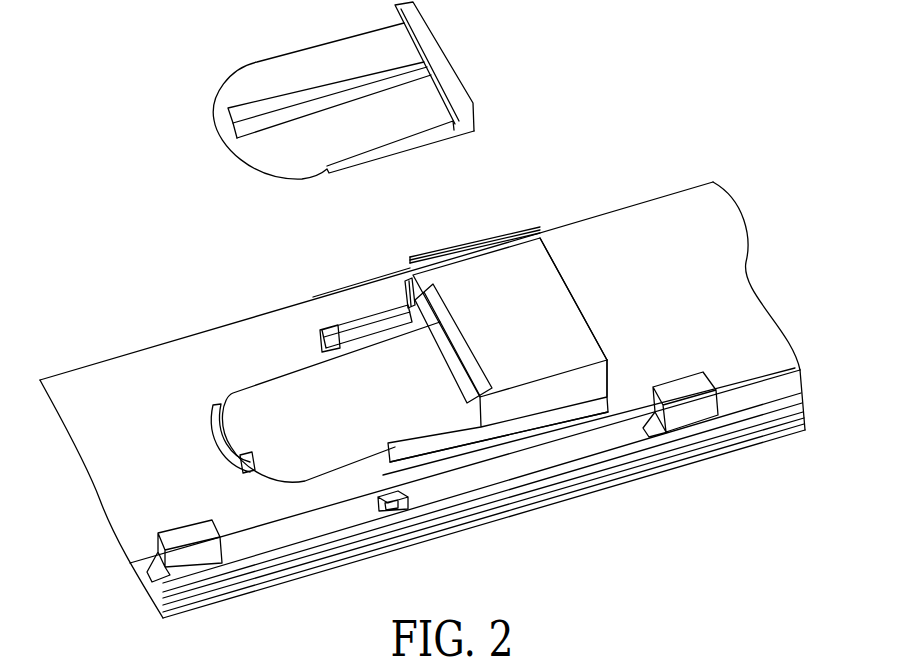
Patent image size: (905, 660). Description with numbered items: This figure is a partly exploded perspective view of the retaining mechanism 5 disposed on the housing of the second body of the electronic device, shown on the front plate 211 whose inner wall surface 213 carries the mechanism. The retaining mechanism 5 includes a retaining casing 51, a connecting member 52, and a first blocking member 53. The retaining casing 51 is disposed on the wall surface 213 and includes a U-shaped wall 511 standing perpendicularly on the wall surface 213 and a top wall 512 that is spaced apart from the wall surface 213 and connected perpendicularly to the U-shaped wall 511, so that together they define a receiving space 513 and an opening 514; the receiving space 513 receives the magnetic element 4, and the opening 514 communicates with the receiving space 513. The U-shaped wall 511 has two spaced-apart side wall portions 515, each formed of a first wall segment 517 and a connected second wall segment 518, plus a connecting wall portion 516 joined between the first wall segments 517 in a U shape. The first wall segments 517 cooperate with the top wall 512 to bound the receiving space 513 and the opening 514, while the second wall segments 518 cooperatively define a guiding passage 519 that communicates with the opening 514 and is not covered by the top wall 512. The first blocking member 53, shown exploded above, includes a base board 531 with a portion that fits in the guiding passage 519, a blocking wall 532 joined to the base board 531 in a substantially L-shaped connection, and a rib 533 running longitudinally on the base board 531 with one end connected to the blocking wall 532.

The magnetic element 4 is at (450, 280).
The retaining mechanism 5 is at (563, 142).
The retaining casing 51 is at (560, 262).
The U-shaped wall 511 is at (612, 372).
The top wall 512 is at (563, 288).
The receiving space 513 is at (460, 331).
The opening 514 is at (330, 325).
The side wall portions 515 is at (333, 242).
The connecting wall portion 516 is at (588, 327).
The first wall segment 517 is at (402, 266).
The second wall segment 518 is at (400, 269).
The guiding passage 519 is at (400, 404).
The connecting member 52 is at (268, 405).
The first blocking member 53 is at (351, 90).
The base board 531 is at (290, 62).
The blocking wall 532 is at (430, 40).
The rib 533 is at (402, 77).
The front plate 211 is at (645, 202).
The wall surface 213 is at (712, 222).